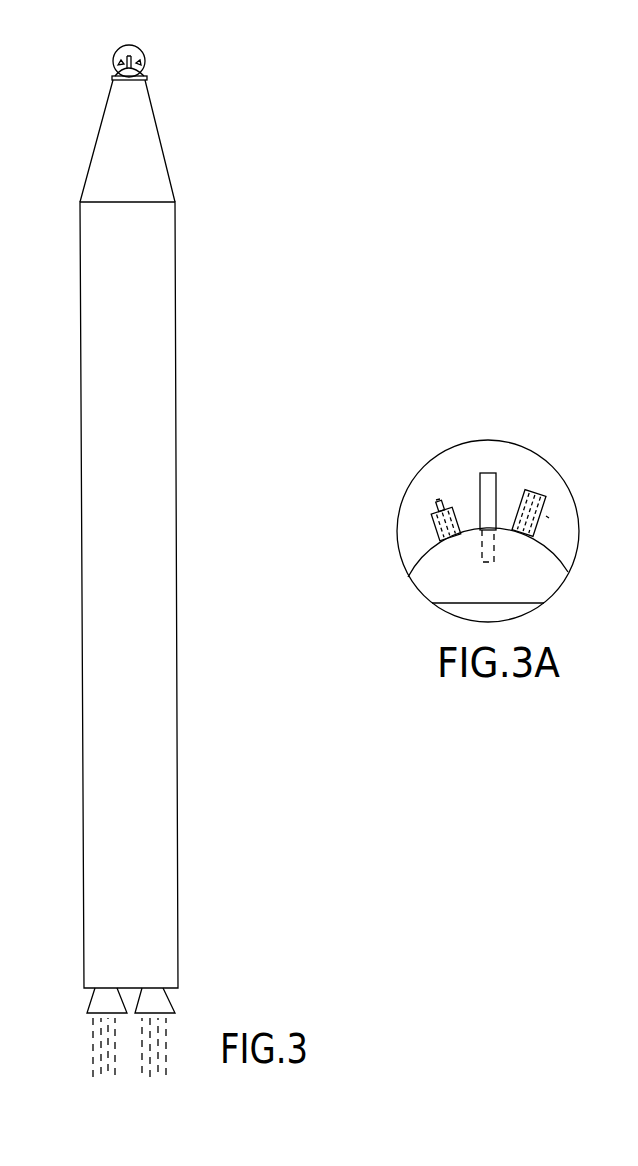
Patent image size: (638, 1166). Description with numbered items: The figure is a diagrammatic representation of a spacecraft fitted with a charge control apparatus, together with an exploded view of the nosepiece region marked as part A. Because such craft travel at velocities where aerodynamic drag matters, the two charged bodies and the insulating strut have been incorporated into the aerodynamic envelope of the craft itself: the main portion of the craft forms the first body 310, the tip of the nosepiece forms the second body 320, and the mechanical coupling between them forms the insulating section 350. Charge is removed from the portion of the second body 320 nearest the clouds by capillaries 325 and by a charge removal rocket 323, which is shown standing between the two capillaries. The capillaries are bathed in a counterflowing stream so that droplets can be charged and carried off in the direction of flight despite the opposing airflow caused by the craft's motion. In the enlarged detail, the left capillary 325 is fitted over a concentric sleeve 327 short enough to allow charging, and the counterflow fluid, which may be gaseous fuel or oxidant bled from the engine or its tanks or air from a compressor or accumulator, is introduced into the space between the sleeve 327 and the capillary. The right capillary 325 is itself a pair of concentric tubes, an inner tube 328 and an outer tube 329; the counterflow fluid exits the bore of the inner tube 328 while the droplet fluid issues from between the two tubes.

In FIG. 3, the first body 310 is at (178, 826).
In FIG. 3, the second body 320 is at (122, 71).
In FIG. 3A, the second body 320 is at (427, 567).
In FIG. 3, the charge removal rocket 323 is at (136, 63).
In FIG. 3A, the charge removal rocket 323 is at (493, 472).
In FIG. 3, the capillary 325 is at (118, 64).
In FIG. 3A, the capillary 325 is at (435, 498).
In FIG. 3A, the concentric sleeve 327 is at (432, 527).
In FIG. 3A, the inner tube 328 is at (530, 489).
In FIG. 3A, the outer tube 329 is at (543, 502).
In FIG. 3, the insulating section 350 is at (113, 81).
In FIG. 3, the part A is at (133, 46).